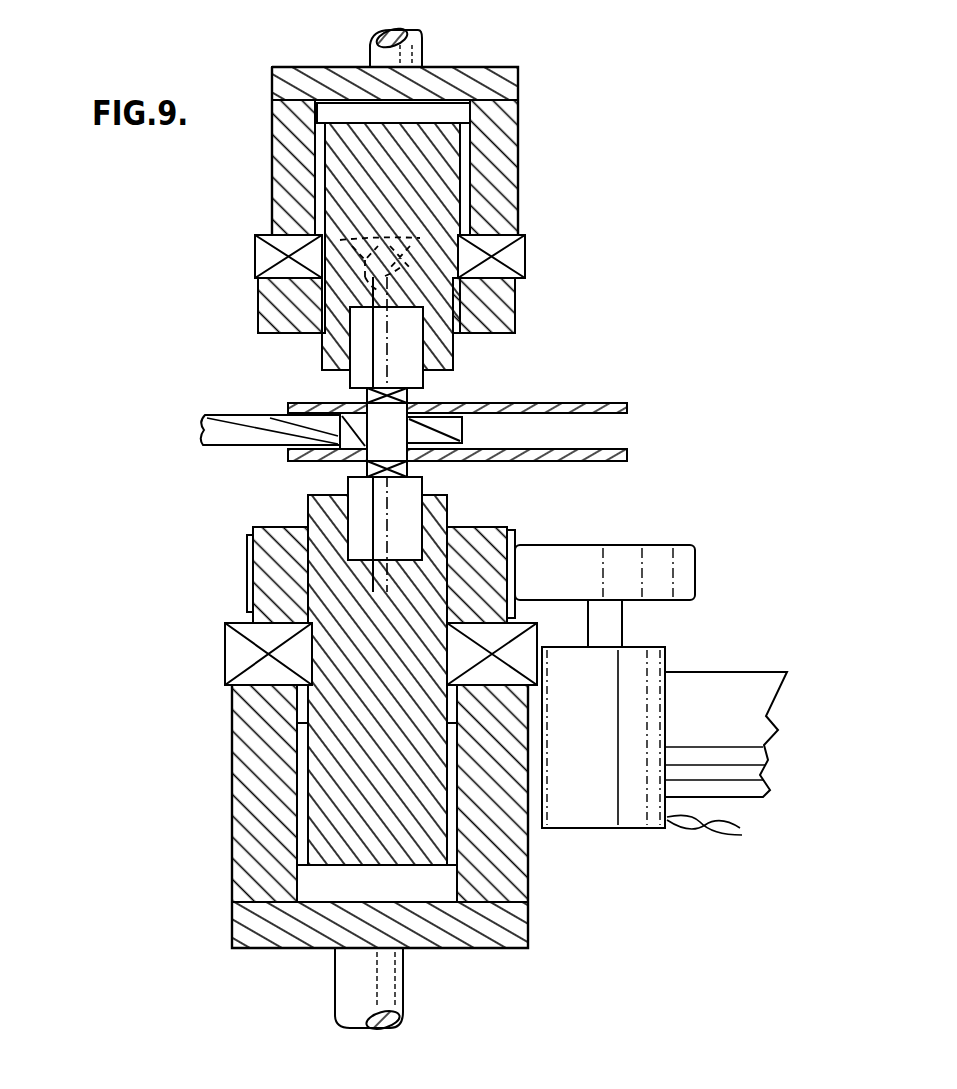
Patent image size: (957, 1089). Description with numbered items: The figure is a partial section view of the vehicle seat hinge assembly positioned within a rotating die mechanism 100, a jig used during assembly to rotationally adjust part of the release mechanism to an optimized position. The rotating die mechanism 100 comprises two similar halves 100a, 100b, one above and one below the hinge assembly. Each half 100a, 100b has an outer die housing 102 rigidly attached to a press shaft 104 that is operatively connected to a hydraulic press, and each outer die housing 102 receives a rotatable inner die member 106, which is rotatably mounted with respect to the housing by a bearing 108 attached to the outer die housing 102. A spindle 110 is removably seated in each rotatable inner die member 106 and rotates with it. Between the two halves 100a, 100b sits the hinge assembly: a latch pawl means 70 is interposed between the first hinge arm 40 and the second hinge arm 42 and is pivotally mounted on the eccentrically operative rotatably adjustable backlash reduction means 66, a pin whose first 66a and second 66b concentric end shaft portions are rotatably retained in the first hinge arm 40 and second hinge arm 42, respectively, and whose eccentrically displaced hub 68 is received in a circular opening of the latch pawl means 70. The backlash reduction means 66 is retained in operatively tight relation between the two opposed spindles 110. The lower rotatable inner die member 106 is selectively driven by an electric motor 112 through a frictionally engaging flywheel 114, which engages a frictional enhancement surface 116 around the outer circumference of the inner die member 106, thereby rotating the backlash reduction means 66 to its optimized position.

The rotating die mechanism 100 is at (645, 168).
The half of rotating die mechanism 100a is at (175, 572).
The half of rotating die mechanism 100b is at (158, 162).
The outer die housing 102 is at (507, 150).
The press shaft 104 is at (424, 48).
The rotatable inner die member 106 is at (266, 293).
The bearing 108 is at (525, 255).
The spindle 110 is at (358, 333).
The electric motor 112 is at (667, 663).
The flywheel 114 is at (668, 546).
The frictional enhancement surface 116 is at (520, 540).
The first hinge arm 40 is at (624, 404).
The second hinge arm 42 is at (624, 463).
The eccentrically operative rotatably adjustable backlash reduction means 66 is at (400, 430).
The first concentric end shaft portion 66a is at (428, 390).
The second concentric end shaft portion 66b is at (367, 463).
The eccentrically displaced hub 68 is at (355, 423).
The latch pawl means 70 is at (220, 415).